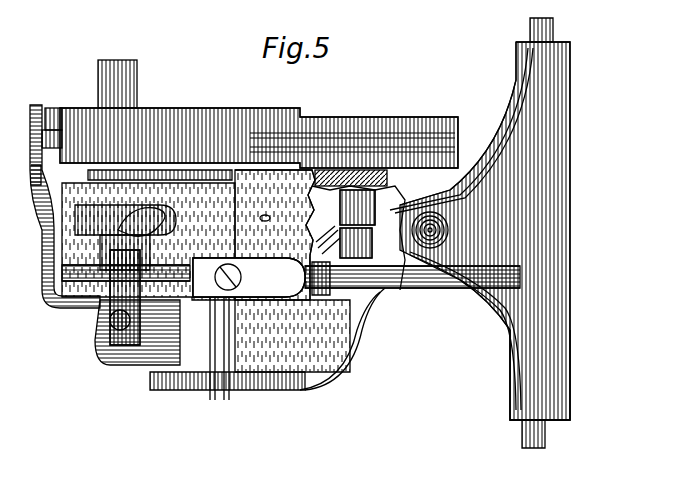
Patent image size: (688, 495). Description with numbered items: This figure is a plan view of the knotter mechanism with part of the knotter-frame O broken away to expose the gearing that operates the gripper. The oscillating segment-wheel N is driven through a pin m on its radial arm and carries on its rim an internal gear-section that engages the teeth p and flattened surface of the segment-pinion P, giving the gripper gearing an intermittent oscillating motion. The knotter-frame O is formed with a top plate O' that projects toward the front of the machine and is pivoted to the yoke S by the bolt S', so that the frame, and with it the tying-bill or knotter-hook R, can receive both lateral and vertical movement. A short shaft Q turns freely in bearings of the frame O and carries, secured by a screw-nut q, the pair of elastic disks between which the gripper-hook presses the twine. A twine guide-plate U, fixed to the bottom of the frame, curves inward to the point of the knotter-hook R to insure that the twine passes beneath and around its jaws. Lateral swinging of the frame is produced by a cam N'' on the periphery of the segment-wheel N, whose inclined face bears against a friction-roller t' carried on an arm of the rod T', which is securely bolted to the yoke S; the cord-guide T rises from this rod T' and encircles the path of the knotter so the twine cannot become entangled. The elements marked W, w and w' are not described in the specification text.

The oscillating segment-wheel N is at (259, 144).
The pin m is at (117, 72).
The cam N'' is at (59, 105).
The friction-roller t' is at (37, 141).
The rod T' is at (65, 209).
The cord-guide T is at (291, 285).
The block W is at (125, 218).
The lower block w is at (125, 252).
The loop w' is at (138, 213).
The tying-bill or knotter-hook R is at (125, 297).
The twine guide-plate U is at (137, 332).
The knotter-frame O is at (223, 286).
The top plate O' is at (275, 235).
The screw-nut q is at (357, 207).
The teeth p is at (344, 242).
The segment-pinion P is at (261, 277).
The bolt S' is at (430, 214).
The yoke S is at (480, 219).
The short shaft Q is at (212, 400).